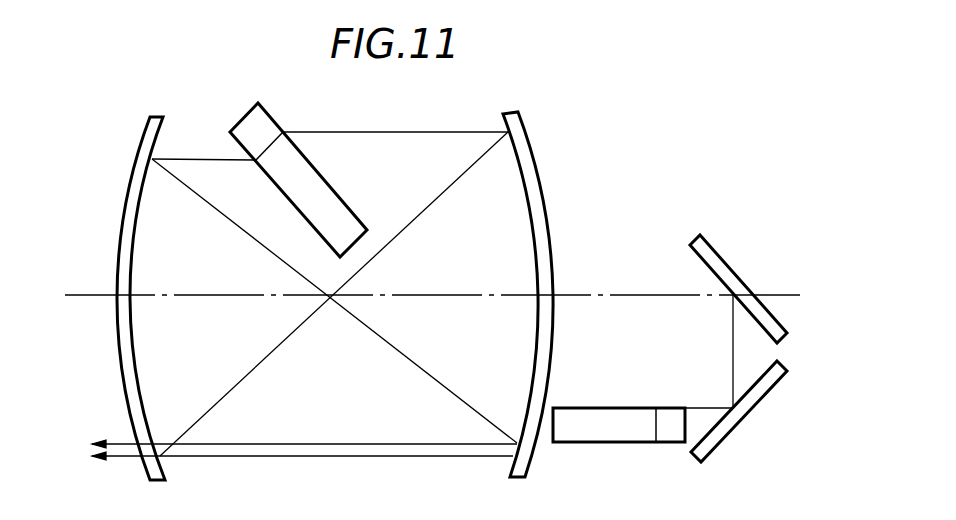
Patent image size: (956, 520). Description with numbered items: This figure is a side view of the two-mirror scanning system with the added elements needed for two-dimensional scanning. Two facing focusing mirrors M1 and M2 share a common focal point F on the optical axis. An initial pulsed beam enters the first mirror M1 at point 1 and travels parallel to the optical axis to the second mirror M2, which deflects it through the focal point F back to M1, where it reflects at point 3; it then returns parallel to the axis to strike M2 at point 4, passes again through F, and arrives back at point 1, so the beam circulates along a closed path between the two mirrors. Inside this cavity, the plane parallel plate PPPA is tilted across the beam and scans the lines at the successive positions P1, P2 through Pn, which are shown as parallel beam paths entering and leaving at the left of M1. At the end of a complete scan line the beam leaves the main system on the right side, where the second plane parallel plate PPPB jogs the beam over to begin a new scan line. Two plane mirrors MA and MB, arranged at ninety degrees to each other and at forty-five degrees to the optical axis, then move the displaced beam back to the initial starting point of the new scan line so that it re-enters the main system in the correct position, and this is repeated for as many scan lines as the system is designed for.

The first mirror M1 is at (142, 278).
The second mirror M2 is at (524, 277).
The plane parallel plate A PPPA is at (296, 165).
The plane parallel plate B PPPB is at (598, 430).
The mirror A MA is at (728, 263).
The mirror B MB is at (748, 403).
The focal point F is at (334, 294).
The n-th scan position Pn is at (94, 321).
The first scan position P1 is at (302, 473).
The second scan position P2 is at (304, 431).
The initial beam entry point 1 is at (541, 460).
The third reflection point 3 is at (414, 130).
The fourth reflection point 4 is at (184, 149).